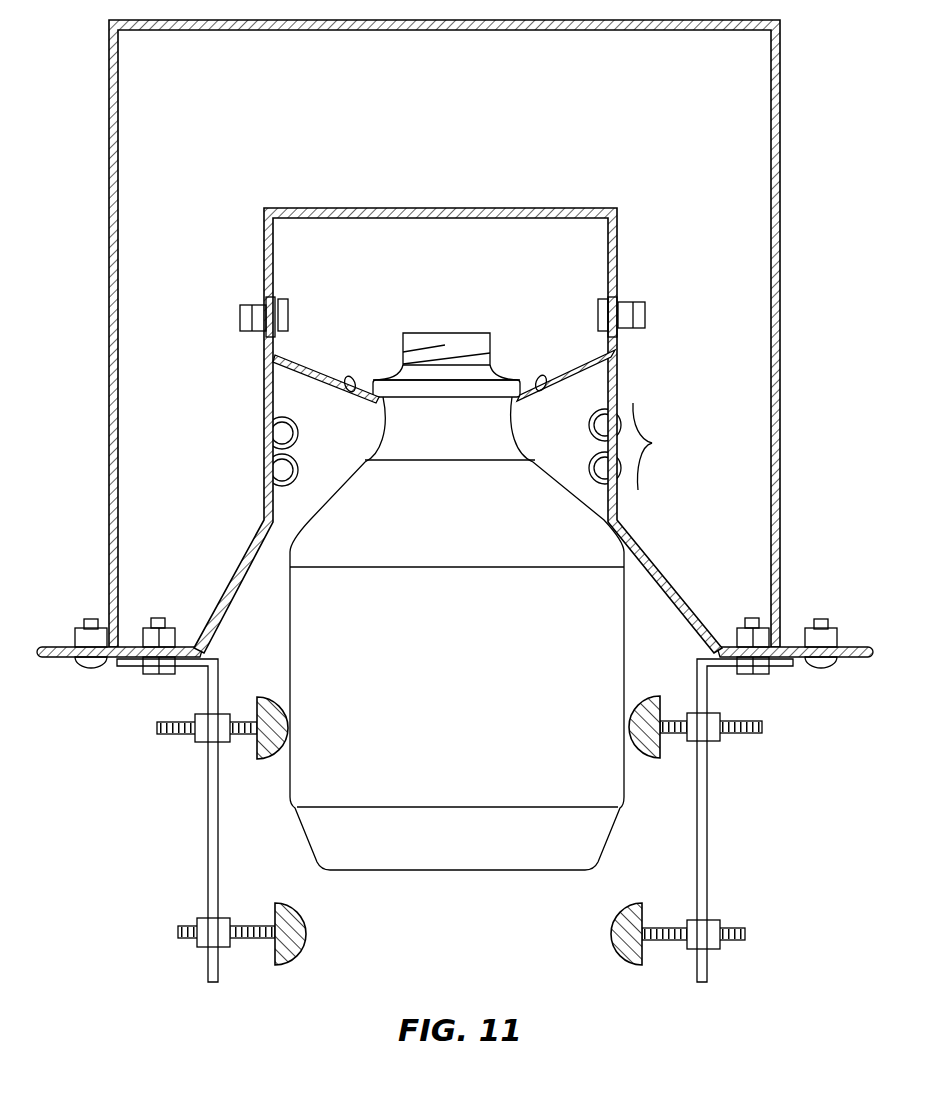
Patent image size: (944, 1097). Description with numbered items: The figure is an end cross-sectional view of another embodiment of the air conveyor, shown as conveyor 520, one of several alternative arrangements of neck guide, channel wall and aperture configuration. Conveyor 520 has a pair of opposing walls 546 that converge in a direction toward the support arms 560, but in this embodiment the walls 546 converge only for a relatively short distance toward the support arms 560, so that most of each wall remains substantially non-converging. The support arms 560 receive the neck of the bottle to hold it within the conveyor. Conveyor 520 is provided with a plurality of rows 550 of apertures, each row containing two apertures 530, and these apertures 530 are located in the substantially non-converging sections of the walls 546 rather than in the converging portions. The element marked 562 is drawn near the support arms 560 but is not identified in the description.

The air conveyor 520 is at (782, 223).
The apertures 530 is at (600, 433).
The opposing walls 546 is at (270, 400).
The rows of apertures 550 is at (652, 443).
The support arms 560 is at (325, 372).
The pivot 562 is at (352, 391).